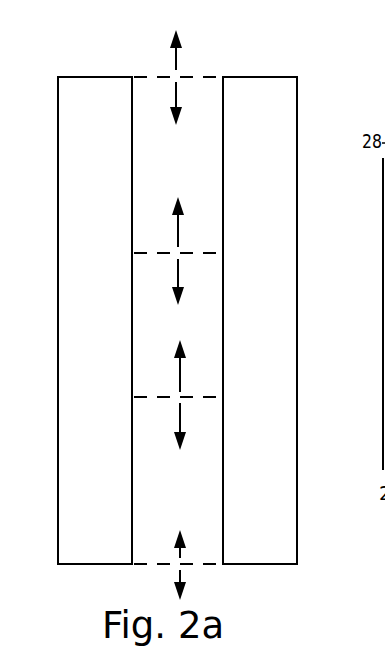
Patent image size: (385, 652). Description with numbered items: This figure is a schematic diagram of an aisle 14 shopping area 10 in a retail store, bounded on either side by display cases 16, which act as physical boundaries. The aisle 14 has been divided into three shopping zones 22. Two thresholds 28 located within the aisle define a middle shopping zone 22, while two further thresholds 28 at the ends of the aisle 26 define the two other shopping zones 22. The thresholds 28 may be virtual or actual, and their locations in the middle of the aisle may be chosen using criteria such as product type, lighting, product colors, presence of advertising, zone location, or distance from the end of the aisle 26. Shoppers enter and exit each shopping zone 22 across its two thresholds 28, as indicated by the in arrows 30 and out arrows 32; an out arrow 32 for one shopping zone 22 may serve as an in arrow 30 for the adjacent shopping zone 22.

The shopping area 10 is at (77, 36).
The aisle 14 is at (159, 525).
The display case 16 is at (97, 298).
The shopping zone 22 is at (193, 173).
The end of an aisle 26 is at (165, 70).
The threshold 28 is at (208, 77).
The in arrow 30 is at (178, 95).
The out arrow 32 is at (178, 56).